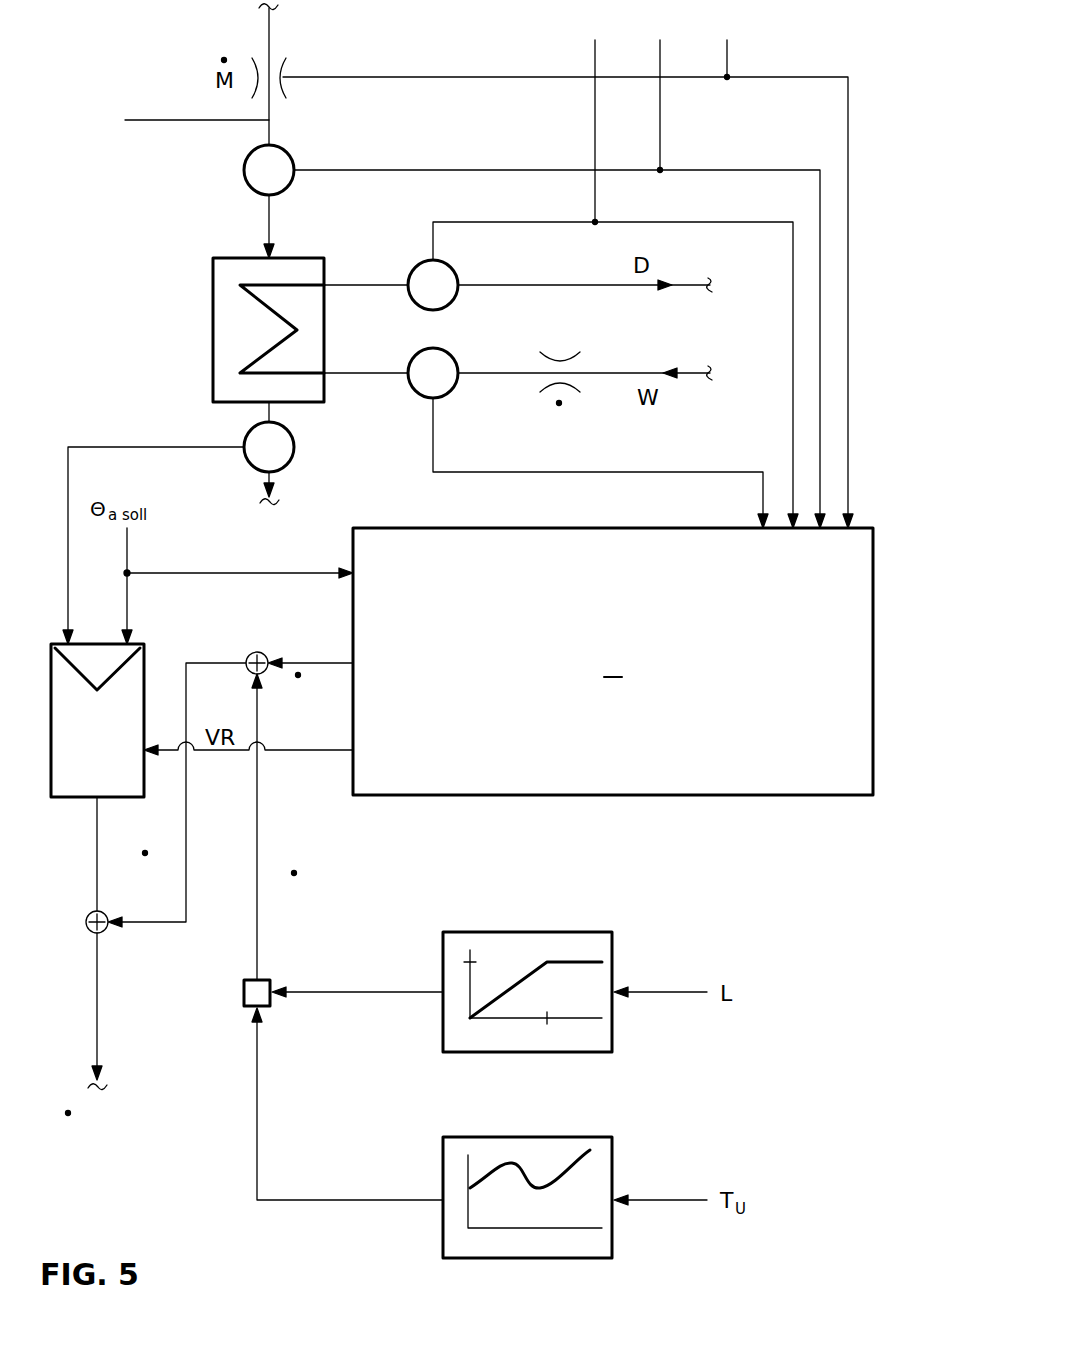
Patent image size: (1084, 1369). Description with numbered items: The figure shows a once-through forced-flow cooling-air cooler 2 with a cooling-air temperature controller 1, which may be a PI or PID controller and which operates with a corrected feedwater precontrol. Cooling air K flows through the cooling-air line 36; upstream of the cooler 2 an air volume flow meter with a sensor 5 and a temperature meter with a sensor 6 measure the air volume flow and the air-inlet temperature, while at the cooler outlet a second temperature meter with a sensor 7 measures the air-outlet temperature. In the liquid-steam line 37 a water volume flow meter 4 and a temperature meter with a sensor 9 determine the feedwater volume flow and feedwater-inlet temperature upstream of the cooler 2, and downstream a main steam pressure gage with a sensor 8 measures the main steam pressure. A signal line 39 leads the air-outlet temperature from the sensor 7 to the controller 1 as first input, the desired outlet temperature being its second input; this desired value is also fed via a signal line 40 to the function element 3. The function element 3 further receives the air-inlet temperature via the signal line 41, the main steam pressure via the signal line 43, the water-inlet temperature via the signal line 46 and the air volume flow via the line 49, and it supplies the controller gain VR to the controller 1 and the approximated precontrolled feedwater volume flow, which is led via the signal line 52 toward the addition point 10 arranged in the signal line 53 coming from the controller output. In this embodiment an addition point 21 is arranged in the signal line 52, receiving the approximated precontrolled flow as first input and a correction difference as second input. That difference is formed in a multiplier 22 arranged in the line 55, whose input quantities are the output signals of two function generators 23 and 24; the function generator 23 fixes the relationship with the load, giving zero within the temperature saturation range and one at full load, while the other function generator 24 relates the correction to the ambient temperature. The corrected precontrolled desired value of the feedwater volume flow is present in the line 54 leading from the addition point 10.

The cooling-air temperature controller 1 is at (97, 720).
The once-through forced-flow cooling-air cooler 2 is at (230, 304).
The function element 3 is at (613, 661).
The water volume flow meter 4 is at (560, 352).
The air volume flow meter sensor 5 is at (285, 70).
The temperature meter sensor 6 is at (243, 177).
The second temperature meter sensor 7 is at (244, 438).
The main steam pressure gage sensor 8 is at (455, 272).
The feedwater temperature meter sensor 9 is at (453, 360).
The addition point 10 is at (86, 922).
The addition point 21 is at (249, 655).
The multiplier 22 is at (245, 1007).
The function generator 23 is at (527, 942).
The function generator 24 is at (527, 1148).
The cooling-air line 36 is at (192, 121).
The liquid-steam line 37 is at (385, 373).
The signal line 39 is at (100, 447).
The signal line 40 is at (207, 573).
The signal line 41 is at (659, 91).
The signal line 43 is at (594, 117).
The signal line 46 is at (690, 472).
The signal line 49 is at (726, 44).
The signal line 52 is at (310, 663).
The signal line 53 is at (97, 858).
The line 54 is at (97, 1007).
The line 55 is at (257, 903).